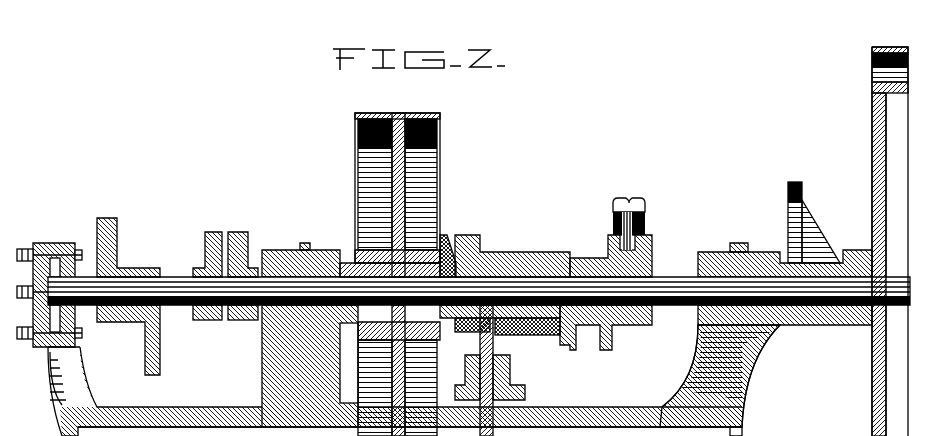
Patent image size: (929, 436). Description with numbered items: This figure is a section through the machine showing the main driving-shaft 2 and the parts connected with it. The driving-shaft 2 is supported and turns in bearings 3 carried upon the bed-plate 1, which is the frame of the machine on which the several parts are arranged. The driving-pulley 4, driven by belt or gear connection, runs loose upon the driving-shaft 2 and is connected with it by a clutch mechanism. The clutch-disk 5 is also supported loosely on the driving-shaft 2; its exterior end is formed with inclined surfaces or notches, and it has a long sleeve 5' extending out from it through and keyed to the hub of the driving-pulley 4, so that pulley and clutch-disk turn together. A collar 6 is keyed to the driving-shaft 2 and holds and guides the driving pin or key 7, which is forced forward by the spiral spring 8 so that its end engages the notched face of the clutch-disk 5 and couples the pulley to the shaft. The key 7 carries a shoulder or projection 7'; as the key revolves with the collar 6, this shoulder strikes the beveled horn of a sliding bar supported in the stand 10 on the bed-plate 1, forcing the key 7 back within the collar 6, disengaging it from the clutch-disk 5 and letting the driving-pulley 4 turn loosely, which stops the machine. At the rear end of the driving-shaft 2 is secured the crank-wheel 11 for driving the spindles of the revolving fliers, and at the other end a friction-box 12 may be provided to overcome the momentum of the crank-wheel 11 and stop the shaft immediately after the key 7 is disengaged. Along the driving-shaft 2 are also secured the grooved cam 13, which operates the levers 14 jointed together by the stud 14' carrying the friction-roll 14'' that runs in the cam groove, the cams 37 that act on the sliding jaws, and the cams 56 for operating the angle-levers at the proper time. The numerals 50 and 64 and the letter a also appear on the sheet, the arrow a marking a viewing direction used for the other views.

The bed-plate 1 is at (395, 391).
The main driving-shaft 2 is at (479, 291).
The bearings 3 is at (340, 243).
The driving-pulley 4 is at (390, 274).
The clutch-disk 5 is at (453, 240).
The sleeve 5' is at (378, 339).
The collar 6 is at (506, 252).
The driving key 7 is at (498, 370).
The shoulder 7' is at (511, 377).
The spiral spring 8 is at (556, 336).
The stand 10 is at (464, 377).
The crank-wheel 11 is at (896, 195).
The friction-box 12 is at (47, 287).
The cam 13 is at (615, 292).
The levers 14 is at (619, 224).
The stud 14' is at (660, 221).
The friction-roll 14'' is at (592, 246).
The cams 37 is at (160, 368).
The bracket 50 is at (814, 222).
The cams 56 is at (228, 274).
The shaft section 64 is at (507, 288).
The arrow a is at (912, 285).